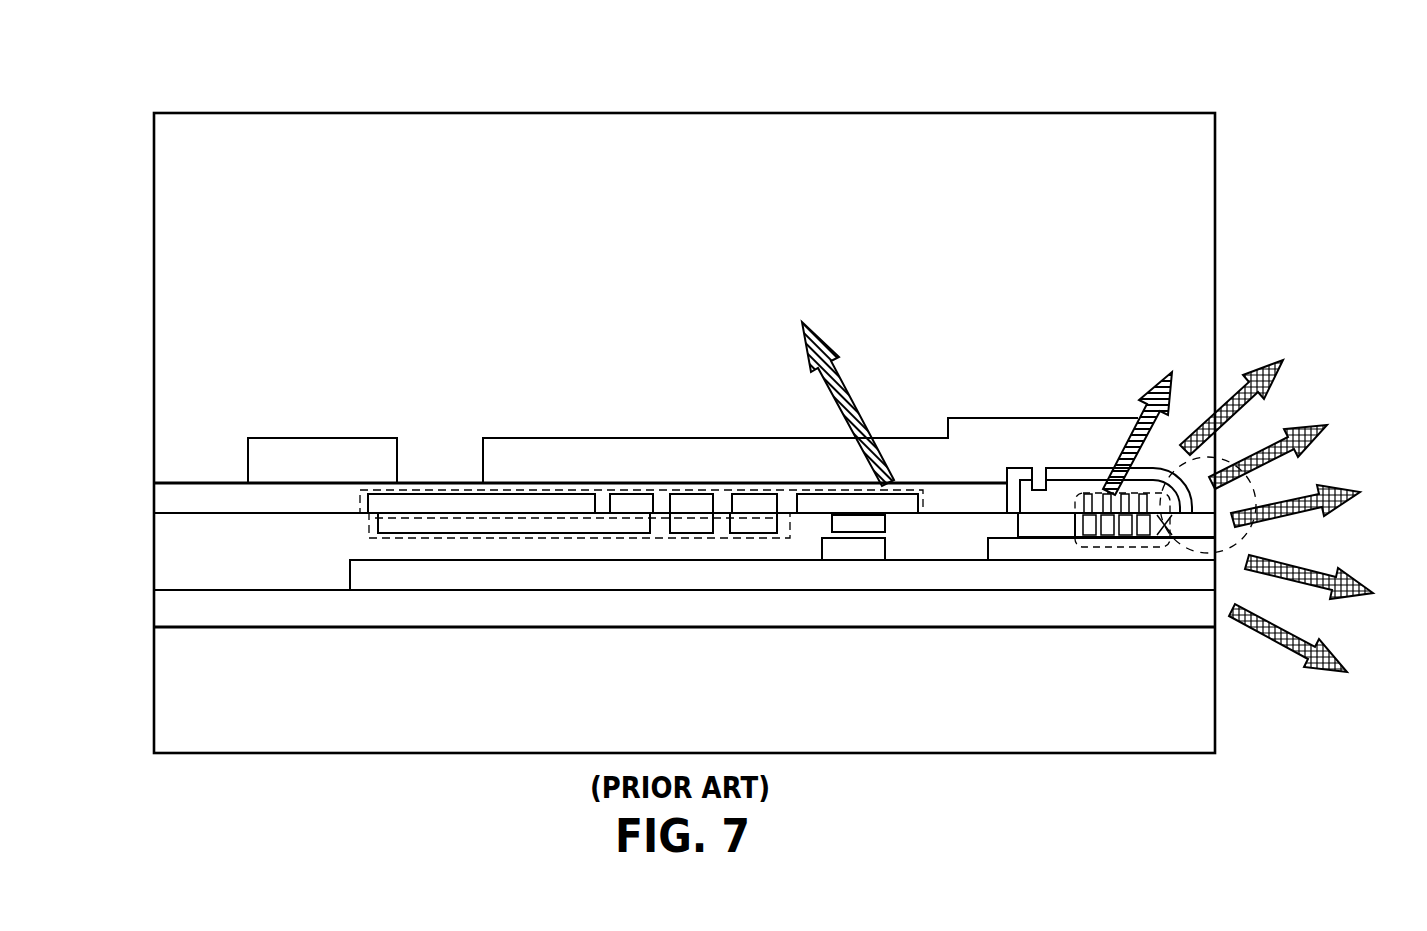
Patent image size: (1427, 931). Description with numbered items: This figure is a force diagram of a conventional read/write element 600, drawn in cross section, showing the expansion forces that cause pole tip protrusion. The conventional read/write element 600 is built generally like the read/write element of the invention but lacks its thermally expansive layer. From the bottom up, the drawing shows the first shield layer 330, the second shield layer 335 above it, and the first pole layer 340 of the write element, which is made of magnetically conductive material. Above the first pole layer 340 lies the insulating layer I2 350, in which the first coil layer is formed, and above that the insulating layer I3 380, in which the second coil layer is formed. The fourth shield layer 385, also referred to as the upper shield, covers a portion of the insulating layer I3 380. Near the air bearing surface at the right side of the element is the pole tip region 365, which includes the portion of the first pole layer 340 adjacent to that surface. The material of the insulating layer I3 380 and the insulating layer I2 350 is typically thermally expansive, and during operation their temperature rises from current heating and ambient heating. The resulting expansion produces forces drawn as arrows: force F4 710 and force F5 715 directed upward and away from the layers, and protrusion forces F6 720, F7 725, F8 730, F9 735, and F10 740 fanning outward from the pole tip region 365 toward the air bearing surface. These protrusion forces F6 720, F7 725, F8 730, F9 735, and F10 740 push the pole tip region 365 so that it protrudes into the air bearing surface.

The conventional read/write element 600 is at (710, 81).
The fourth shield layer 385 is at (847, 471).
The insulating layer I3 380 is at (1003, 513).
The insulating layer I2 350 is at (970, 552).
The first pole layer 340 is at (715, 587).
The second shield layer 335 is at (740, 621).
The first shield layer 330 is at (745, 679).
The pole tip region 365 is at (1184, 559).
The force F4 710 is at (840, 384).
The force F5 715 is at (1163, 384).
The protrusion force F6 720 is at (1266, 362).
The protrusion force F7 725 is at (1302, 428).
The protrusion force F8 730 is at (1333, 490).
The protrusion force F9 735 is at (1338, 600).
The protrusion force F10 740 is at (1312, 670).